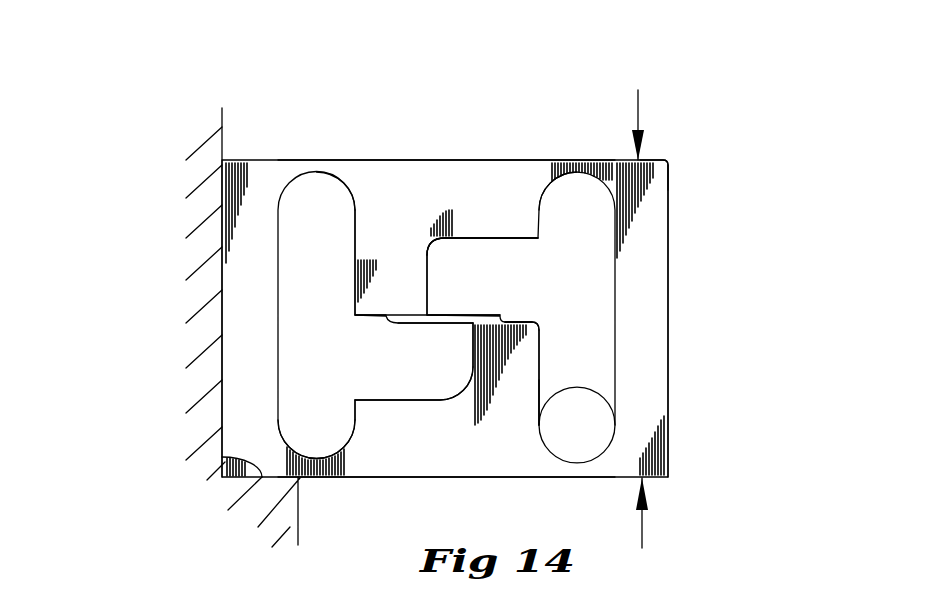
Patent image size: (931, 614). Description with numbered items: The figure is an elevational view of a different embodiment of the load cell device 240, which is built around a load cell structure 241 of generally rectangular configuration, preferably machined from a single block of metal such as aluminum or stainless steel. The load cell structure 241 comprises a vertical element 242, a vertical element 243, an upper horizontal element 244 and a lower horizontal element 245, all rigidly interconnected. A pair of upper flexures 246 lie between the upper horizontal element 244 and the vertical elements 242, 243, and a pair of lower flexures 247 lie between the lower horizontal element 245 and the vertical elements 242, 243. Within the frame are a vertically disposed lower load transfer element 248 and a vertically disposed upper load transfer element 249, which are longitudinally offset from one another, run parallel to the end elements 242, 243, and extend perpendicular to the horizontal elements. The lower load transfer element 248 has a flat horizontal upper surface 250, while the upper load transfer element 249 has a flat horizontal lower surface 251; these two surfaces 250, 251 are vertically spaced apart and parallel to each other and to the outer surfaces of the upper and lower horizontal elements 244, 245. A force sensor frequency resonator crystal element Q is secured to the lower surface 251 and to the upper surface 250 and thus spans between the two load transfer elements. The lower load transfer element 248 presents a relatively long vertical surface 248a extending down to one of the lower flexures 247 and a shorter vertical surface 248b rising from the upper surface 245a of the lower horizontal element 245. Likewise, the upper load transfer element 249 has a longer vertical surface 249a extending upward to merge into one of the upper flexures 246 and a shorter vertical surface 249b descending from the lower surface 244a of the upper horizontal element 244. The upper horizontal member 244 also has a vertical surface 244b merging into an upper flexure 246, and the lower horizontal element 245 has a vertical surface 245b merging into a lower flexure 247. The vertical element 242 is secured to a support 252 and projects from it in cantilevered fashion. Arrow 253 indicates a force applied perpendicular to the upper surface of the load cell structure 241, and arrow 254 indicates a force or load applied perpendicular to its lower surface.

The load cell device 240 is at (553, 106).
The load cell structure 241 is at (682, 176).
The vertical element 242 is at (222, 304).
The vertical element 243 is at (668, 302).
The upper horizontal element 244 is at (401, 163).
The lower surface of upper horizontal element 244a is at (490, 238).
The vertical surface of upper horizontal member 244b is at (555, 180).
The lower horizontal element 245 is at (412, 470).
The upper surface of lower horizontal element 245a is at (392, 394).
The vertical surface of lower horizontal element 245b is at (353, 415).
The upper flexures 246 is at (311, 163).
The lower flexures 247 is at (322, 477).
The lower load transfer element 248 is at (514, 354).
The long vertical surface of lower load transfer element 248a is at (541, 405).
The shorter vertical surface of lower load transfer element 248b is at (448, 333).
The upper load transfer element 249 is at (356, 305).
The longer vertical surface of upper load transfer element 249a is at (346, 200).
The shorter vertical surface of upper load transfer element 249b is at (421, 296).
The upper surface of lower load transfer element 250 is at (531, 318).
The lower surface of upper load transfer element 251 is at (357, 318).
The support 252 is at (222, 460).
The arrow 253 is at (638, 100).
The arrow 254 is at (642, 527).